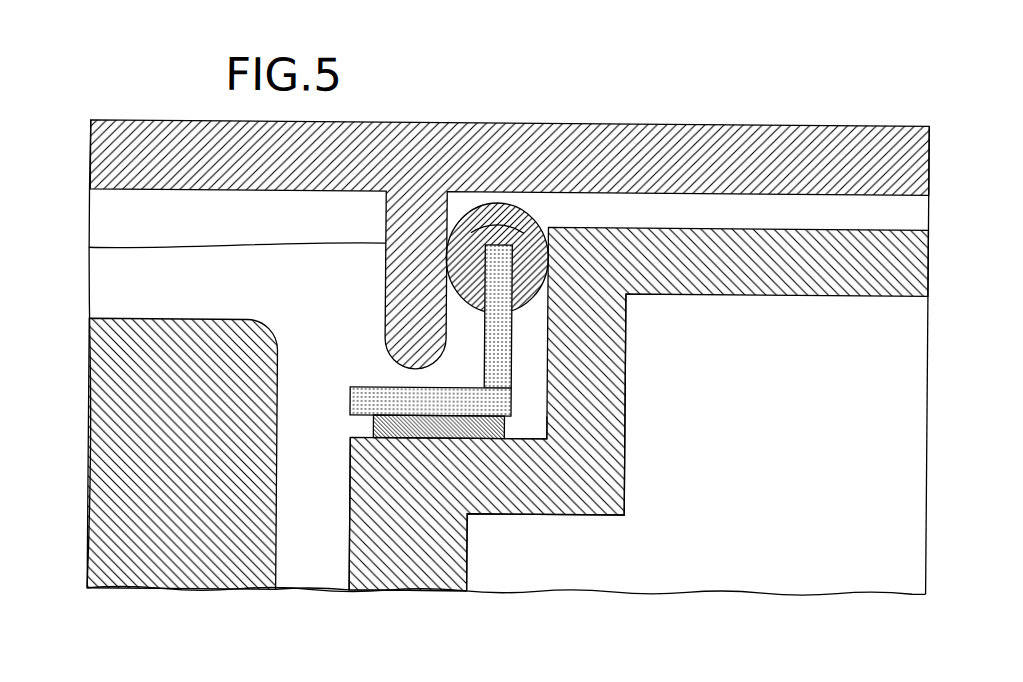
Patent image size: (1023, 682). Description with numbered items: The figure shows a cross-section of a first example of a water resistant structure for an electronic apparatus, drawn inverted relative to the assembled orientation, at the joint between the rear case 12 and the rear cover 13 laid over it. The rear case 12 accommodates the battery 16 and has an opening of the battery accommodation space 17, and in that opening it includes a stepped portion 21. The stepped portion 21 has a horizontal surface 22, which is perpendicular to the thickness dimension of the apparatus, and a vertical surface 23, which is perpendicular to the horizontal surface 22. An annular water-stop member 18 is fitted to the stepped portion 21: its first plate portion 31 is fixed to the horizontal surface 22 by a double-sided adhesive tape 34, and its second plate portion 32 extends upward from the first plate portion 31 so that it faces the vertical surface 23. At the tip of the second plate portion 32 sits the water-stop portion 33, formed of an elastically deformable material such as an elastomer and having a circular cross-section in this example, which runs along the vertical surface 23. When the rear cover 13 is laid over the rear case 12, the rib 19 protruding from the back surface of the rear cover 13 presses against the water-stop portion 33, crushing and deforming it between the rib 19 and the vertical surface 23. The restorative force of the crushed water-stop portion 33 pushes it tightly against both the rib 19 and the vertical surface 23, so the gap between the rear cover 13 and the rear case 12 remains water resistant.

The rear case 12 is at (904, 256).
The rear cover 13 is at (99, 152).
The battery 16 is at (89, 479).
The battery accommodation space 17 is at (314, 578).
The water-stop member 18 is at (532, 214).
The rib 19 is at (88, 250).
The stepped portion 21 is at (613, 488).
The horizontal surface 22 is at (364, 439).
The vertical surface 23 is at (548, 423).
The first plate portion 31 is at (350, 402).
The second plate portion 32 is at (495, 352).
The water-stop portion 33 is at (495, 208).
The double-sided adhesive tape 34 is at (417, 439).